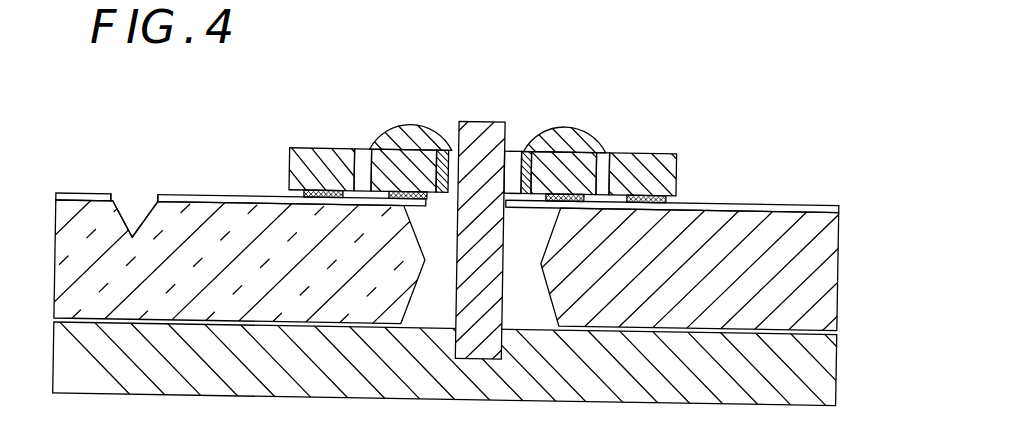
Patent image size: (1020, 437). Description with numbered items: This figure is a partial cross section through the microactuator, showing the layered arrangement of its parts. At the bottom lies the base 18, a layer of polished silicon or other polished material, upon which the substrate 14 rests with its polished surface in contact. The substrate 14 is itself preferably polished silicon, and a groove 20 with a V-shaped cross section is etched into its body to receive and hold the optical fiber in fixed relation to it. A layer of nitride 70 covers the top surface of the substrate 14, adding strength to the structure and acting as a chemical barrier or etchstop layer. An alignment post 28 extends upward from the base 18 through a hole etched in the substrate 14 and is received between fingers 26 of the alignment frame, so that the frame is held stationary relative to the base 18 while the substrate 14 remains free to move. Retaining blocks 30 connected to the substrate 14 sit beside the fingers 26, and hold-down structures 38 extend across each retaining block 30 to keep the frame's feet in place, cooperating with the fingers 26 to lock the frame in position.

The substrate 14 is at (840, 262).
The base 18 is at (838, 385).
The groove 20 is at (150, 148).
The fingers 26 is at (445, 147).
The alignment post 28 is at (477, 122).
The retaining block 30 is at (288, 160).
The hold-down structure 38 is at (393, 126).
The nitride layer 70 is at (780, 207).